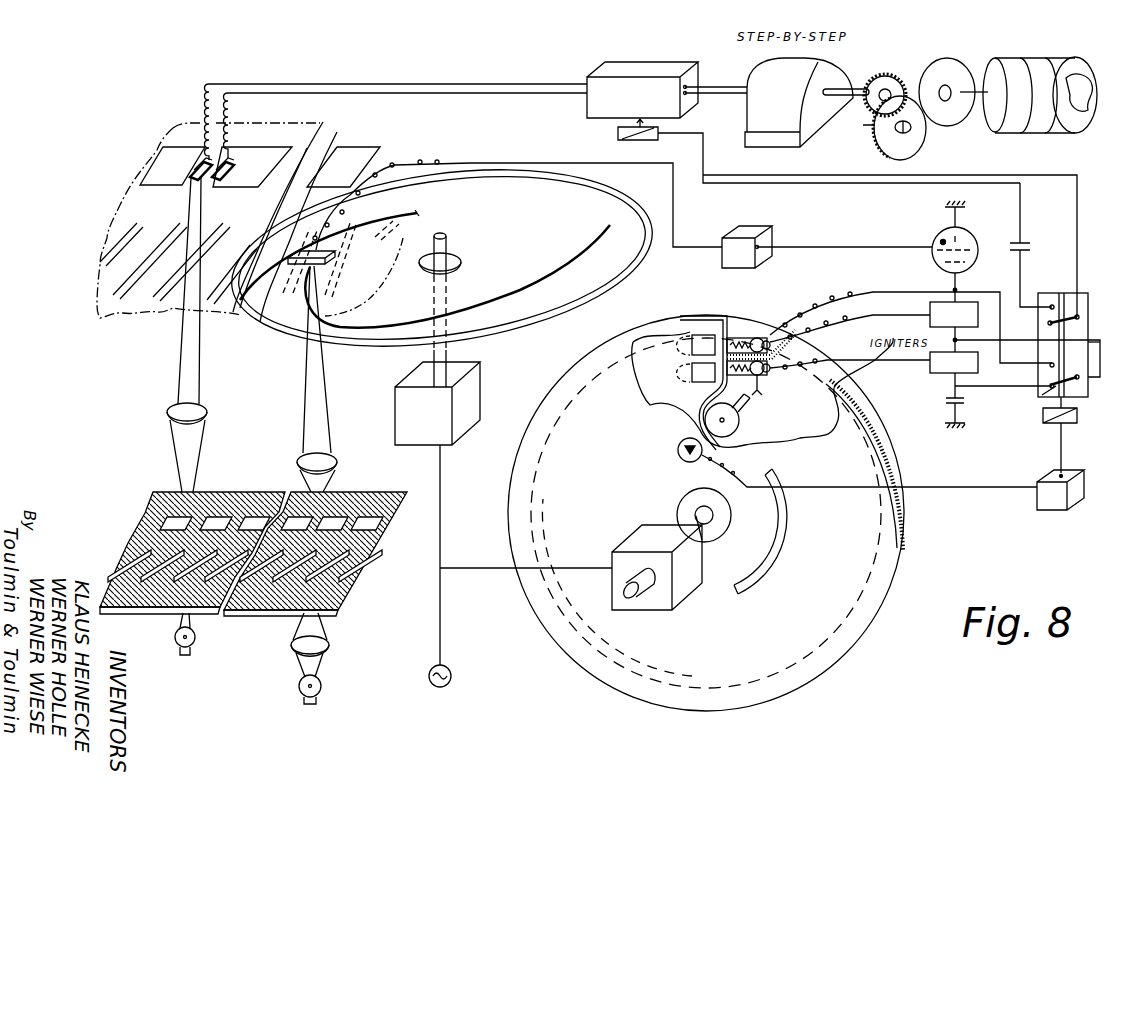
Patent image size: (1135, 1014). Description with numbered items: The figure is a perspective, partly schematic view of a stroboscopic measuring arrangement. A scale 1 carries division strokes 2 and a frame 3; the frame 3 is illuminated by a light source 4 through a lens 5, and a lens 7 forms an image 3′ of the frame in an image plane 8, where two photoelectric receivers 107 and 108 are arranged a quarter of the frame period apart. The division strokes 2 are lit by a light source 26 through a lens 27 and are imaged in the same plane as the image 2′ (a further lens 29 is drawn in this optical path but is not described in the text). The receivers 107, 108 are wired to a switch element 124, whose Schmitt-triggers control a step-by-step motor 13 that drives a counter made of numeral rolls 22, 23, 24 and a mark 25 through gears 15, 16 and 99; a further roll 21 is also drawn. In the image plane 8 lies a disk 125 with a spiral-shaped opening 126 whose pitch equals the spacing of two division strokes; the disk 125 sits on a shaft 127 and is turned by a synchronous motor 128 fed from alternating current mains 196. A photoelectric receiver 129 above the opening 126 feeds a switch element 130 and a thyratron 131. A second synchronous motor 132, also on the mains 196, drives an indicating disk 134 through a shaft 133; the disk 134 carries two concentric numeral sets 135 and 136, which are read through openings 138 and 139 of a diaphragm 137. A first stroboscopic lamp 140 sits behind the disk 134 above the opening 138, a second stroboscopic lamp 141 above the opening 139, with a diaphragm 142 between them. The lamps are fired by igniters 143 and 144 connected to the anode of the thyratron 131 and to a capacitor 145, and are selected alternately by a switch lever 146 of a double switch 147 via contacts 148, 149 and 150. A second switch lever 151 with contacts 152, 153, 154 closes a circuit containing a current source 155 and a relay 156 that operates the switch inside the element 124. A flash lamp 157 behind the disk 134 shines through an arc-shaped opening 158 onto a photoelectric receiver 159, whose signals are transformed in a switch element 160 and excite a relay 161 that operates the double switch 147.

The scale 1 is at (128, 611).
The division strokes 2 is at (245, 613).
The image of division strokes 2′ is at (157, 314).
The frame 3 is at (295, 515).
The image of frame 3′ is at (273, 153).
The light source 4 is at (194, 646).
The lens 5 is at (170, 610).
The lens 7 is at (168, 412).
The image plane 8 is at (233, 314).
The step-by-step motor 13 is at (775, 122).
The gear 15 is at (884, 77).
The gear 16 is at (890, 138).
The counter drum 21 is at (988, 126).
The numeral roll 22 is at (1060, 126).
The numeral roll 23 is at (1035, 126).
The numeral roll 24 is at (1008, 126).
The mark 25 is at (1080, 105).
The light source 26 is at (322, 687).
The lens 27 is at (330, 645).
The lens 29 is at (332, 456).
The gear 99 is at (946, 122).
The photoelectric receiver 107 is at (188, 166).
The photoelectric receiver 108 is at (212, 179).
The switch element 124 is at (587, 95).
The disk 125 is at (387, 340).
The spiral-shaped opening 126 is at (553, 293).
The shaft 127 is at (447, 242).
The synchronous motor 128 is at (395, 414).
The photoelectric receiver 129 is at (312, 265).
The switch element 130 is at (746, 226).
The thyratron 131 is at (934, 241).
The synchronous motor 132 is at (652, 604).
The shaft 133 is at (696, 516).
The indicating disk 134 is at (670, 660).
The first set of numerals 135 is at (823, 655).
The second set of numerals 136 is at (827, 602).
The diaphragm 137 is at (645, 380).
The opening 138 is at (680, 318).
The opening 139 is at (703, 381).
The first stroboscopic lamp 140 is at (752, 332).
The second stroboscopic lamp 141 is at (768, 393).
The diaphragm 142 is at (793, 332).
The igniter 143 is at (930, 315).
The igniter 144 is at (930, 361).
The capacitor 145 is at (943, 401).
The switch lever 146 is at (1050, 388).
The double switch 147 is at (1044, 408).
The contact 148 is at (1050, 364).
The contact 149 is at (1048, 383).
The contact 150 is at (1076, 380).
The second switch lever 151 is at (1074, 313).
The contact 152 is at (1076, 300).
The contact 153 is at (1050, 304).
The contact 154 is at (1048, 325).
The current source 155 is at (1022, 246).
The relay 156 is at (618, 133).
The flash lamp 157 is at (705, 420).
The arc-shaped opening 158 is at (780, 530).
The photoelectric receiver 159 is at (688, 460).
The switch element 160 is at (1053, 508).
The relay 161 is at (1050, 423).
The alternating current mains 196 is at (452, 676).